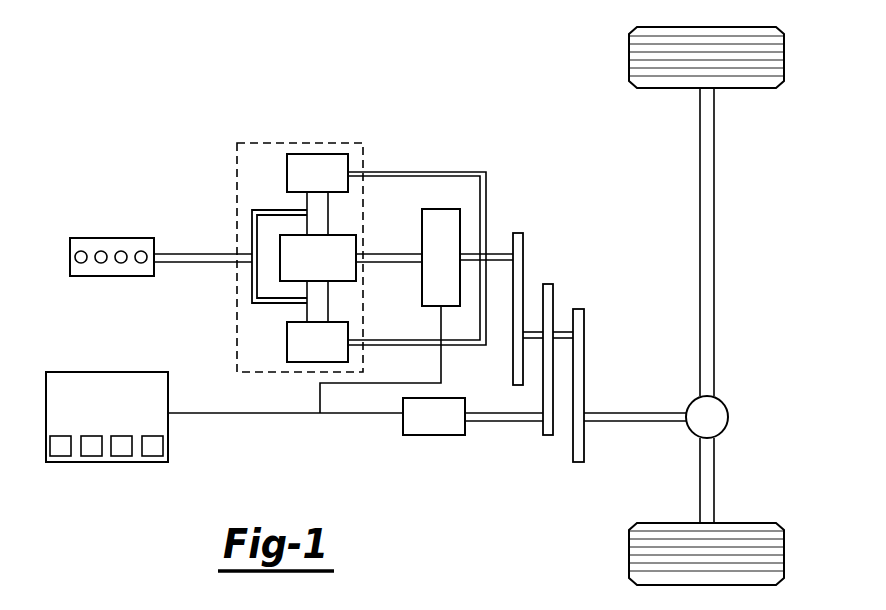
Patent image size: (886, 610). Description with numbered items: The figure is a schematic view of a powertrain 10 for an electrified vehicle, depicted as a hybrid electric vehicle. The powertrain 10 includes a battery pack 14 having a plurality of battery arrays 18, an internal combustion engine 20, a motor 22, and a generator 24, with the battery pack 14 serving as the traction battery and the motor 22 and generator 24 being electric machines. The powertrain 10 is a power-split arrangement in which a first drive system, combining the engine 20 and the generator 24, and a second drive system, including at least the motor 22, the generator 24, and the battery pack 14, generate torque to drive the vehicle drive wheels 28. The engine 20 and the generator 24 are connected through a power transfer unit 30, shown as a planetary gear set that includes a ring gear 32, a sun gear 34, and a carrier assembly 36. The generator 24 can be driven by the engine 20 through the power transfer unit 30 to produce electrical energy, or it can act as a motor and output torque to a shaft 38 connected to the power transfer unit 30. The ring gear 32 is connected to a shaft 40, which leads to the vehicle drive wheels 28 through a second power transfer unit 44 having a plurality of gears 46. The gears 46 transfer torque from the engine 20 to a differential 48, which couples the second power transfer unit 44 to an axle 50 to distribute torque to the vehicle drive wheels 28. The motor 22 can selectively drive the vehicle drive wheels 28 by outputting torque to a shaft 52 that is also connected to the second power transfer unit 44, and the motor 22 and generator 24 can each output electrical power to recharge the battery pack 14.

The powertrain 10 is at (95, 66).
The battery pack 14 is at (107, 372).
The battery arrays 18 is at (60, 456).
The internal combustion engine 20 is at (68, 236).
The motor 22 is at (437, 435).
The generator 24 is at (460, 221).
The vehicle drive wheels 28 is at (784, 57).
The power transfer unit 30 is at (367, 151).
The ring gear 32 is at (287, 172).
The sun gear 34 is at (343, 281).
The carrier assembly 36 is at (252, 231).
The shaft 38 is at (393, 252).
The shaft 40 is at (500, 263).
The second power transfer unit 44 is at (596, 341).
The gears 46 is at (523, 248).
The differential 48 is at (728, 417).
The axle 50 is at (714, 243).
The shaft 52 is at (505, 421).